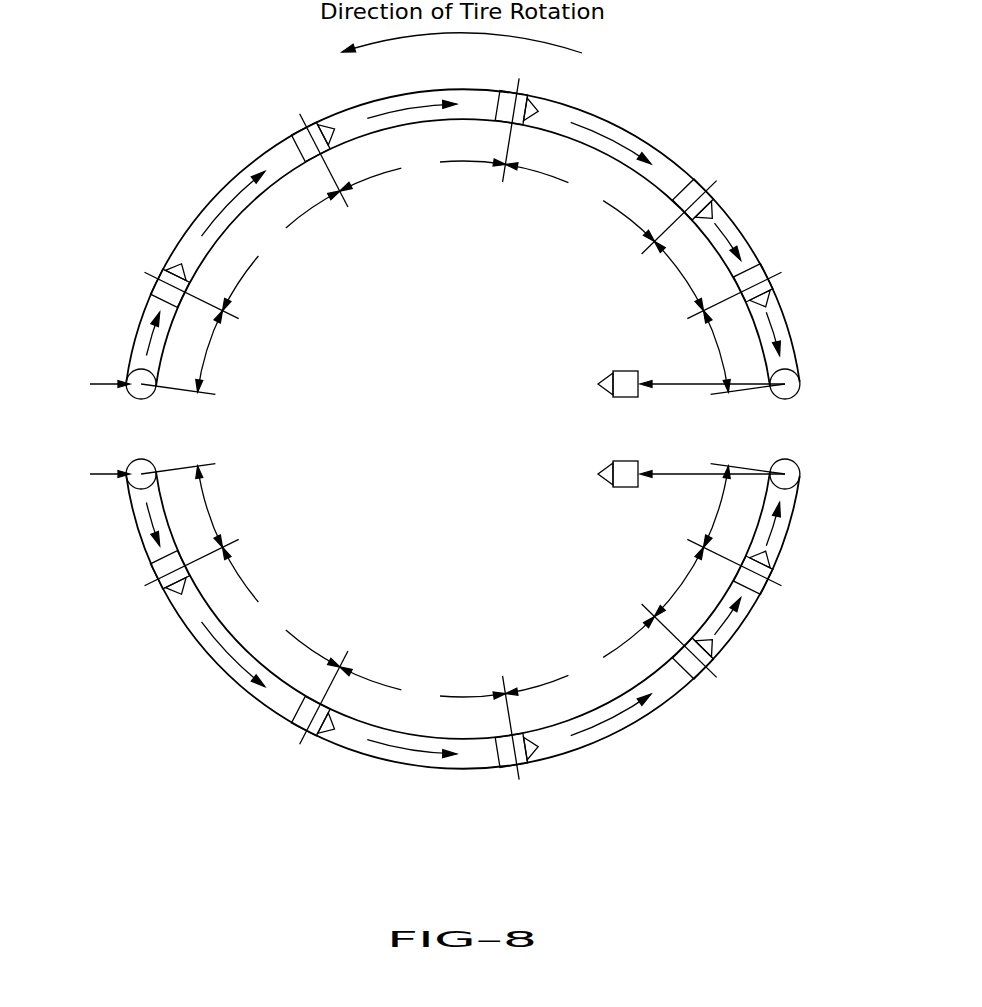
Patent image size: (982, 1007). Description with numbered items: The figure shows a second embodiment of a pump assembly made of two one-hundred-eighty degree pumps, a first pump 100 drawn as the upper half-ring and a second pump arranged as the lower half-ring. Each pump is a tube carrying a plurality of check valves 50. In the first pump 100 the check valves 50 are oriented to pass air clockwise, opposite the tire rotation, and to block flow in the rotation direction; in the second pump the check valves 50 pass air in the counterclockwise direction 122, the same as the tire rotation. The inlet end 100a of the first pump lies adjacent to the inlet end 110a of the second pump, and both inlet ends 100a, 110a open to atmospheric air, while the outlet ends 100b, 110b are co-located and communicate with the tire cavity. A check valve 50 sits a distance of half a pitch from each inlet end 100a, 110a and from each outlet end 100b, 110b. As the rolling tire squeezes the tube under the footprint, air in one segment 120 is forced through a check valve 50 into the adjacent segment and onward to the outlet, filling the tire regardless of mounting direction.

The first pump assembly 100 is at (458, 422).
The inlet end of pump 100 100a is at (128, 378).
The outlet end of pump 100 100b is at (787, 390).
The inlet end of pump 110 110a is at (125, 490).
The outlet end of pump 110 110b is at (789, 469).
The segment 120 is at (378, 102).
The counterclockwise direction 122 is at (215, 658).
The check valve 50 is at (300, 140).